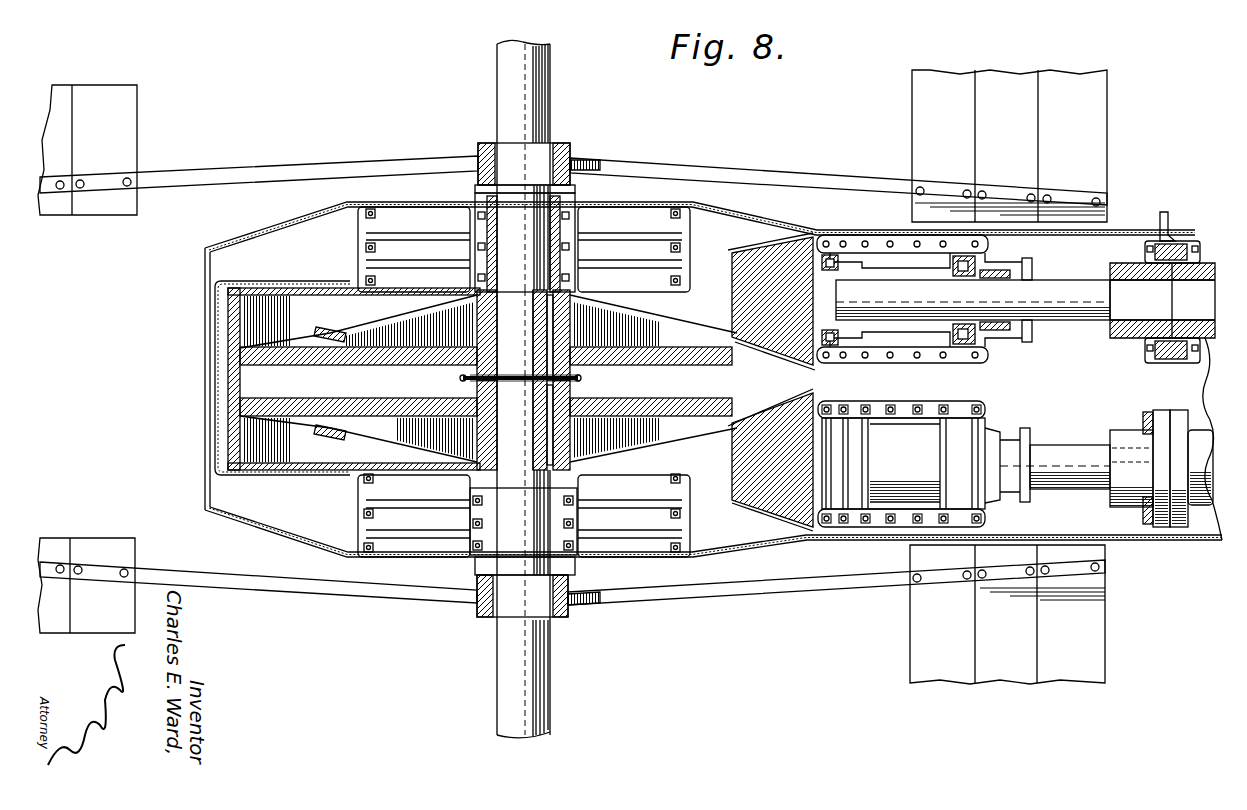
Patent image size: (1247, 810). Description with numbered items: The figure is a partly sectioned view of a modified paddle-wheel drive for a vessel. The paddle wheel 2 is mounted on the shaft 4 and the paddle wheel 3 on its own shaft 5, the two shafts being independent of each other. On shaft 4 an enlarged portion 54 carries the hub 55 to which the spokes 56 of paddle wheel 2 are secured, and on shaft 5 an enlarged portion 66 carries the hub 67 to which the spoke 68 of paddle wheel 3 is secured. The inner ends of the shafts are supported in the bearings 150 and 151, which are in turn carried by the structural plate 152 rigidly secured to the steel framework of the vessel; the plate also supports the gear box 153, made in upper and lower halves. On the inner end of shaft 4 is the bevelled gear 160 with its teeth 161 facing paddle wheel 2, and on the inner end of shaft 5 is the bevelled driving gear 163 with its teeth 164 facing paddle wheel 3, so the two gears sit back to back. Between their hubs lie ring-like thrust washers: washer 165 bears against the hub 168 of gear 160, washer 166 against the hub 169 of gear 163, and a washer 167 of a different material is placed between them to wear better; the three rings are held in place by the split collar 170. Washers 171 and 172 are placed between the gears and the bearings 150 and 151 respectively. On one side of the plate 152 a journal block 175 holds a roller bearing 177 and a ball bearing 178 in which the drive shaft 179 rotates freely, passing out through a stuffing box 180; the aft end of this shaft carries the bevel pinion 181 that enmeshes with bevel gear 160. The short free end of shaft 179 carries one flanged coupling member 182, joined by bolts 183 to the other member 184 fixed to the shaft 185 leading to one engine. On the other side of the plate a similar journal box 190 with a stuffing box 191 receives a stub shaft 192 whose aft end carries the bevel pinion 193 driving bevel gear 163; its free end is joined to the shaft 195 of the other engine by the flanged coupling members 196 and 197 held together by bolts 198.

The paddle wheel 2 is at (125, 132).
The paddle wheel 3 is at (100, 545).
The shaft 4 is at (540, 90).
The shaft 5 is at (540, 672).
The enlarged portion 54 is at (503, 152).
The hub 55 is at (480, 150).
The spokes 56 is at (663, 165).
The enlarged portion 66 is at (483, 602).
The hub 67 is at (565, 605).
The spoke 68 is at (705, 588).
The bearing 150 is at (476, 248).
The bearing 151 is at (490, 513).
The structural plate 152 is at (283, 226).
The gear box 153 is at (288, 283).
The bevelled gear 160 is at (420, 315).
The teeth 161 is at (330, 332).
The bevelled driving gear 163 is at (420, 438).
The teeth 164 is at (330, 430).
The thrust washer 165 is at (500, 352).
The thrust washer 166 is at (548, 388).
The thrust washer 167 is at (547, 372).
The hub 168 is at (478, 330).
The hub 169 is at (497, 440).
The split collar 170 is at (462, 378).
The washer 171 is at (598, 300).
The washer 172 is at (600, 447).
The journal block 175 is at (960, 358).
The roller bearing 177 is at (850, 262).
The ball bearing 178 is at (1005, 268).
The drive shaft 179 is at (1040, 290).
The stuffing box 180 is at (1027, 258).
The bevel pinion 181 is at (745, 250).
The flanged coupling member 182 is at (1152, 232).
The bolts 183 is at (1145, 250).
The flanged coupling member 184 is at (1185, 240).
The shaft 185 is at (1195, 285).
The journal box 190 is at (928, 402).
The stuffing box 191 is at (1025, 428).
The stub shaft 192 is at (1065, 438).
The bevel pinion 193 is at (735, 455).
The shaft 195 is at (1095, 462).
The flanged coupling member 196 is at (1160, 410).
The flanged coupling member 197 is at (1180, 410).
The bolts 198 is at (1143, 418).